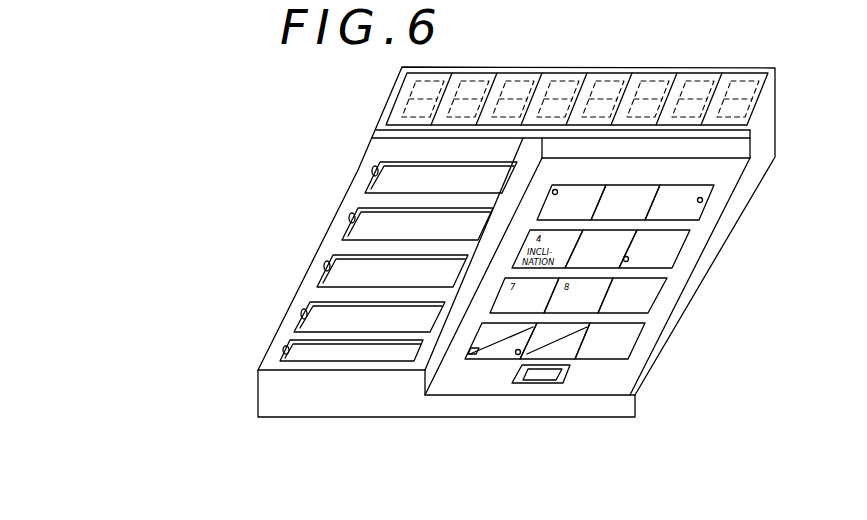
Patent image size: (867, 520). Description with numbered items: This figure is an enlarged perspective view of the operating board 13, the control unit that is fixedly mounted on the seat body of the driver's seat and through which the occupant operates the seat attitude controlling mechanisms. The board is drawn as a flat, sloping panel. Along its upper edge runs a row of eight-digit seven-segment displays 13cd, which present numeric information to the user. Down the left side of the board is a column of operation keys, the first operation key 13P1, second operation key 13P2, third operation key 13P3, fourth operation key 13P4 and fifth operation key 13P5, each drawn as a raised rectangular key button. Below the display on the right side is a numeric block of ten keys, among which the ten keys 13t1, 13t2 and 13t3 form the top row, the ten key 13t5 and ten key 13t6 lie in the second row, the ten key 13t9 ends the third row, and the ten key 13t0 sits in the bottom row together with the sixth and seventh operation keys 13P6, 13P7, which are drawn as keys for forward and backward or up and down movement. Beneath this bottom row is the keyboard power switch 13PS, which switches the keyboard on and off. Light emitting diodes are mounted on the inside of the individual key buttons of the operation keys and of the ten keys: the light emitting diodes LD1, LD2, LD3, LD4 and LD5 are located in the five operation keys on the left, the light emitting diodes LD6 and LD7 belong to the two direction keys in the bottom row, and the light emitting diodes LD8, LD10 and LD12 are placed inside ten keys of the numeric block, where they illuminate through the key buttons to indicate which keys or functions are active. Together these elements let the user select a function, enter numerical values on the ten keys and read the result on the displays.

The operating board 13 is at (354, 127).
The 7-segment displays 13cd is at (654, 72).
The operation key 13P1 is at (378, 177).
The operation key 13P2 is at (350, 220).
The operation key 13P3 is at (320, 268).
The operation key 13P4 is at (298, 320).
The operation key 13P5 is at (280, 355).
The operation key 13P6 is at (483, 350).
The operation key 13P7 is at (517, 350).
The keyboard power switch 13PS is at (543, 383).
The ten key 13t1 is at (567, 190).
The ten key 13t2 is at (624, 193).
The ten key 13t3 is at (683, 197).
The ten key 13t5 is at (622, 247).
The ten key 13t6 is at (665, 248).
The ten key 13t9 is at (657, 300).
The ten key 13t0 is at (623, 348).
The light emitting diode LD1 is at (373, 167).
The light emitting diode LD2 is at (340, 207).
The light emitting diode LD3 is at (333, 263).
The light emitting diode LD4 is at (317, 320).
The light emitting diode LD5 is at (283, 345).
The light emitting diode LD6 is at (477, 350).
The light emitting diode LD7 is at (517, 353).
The light emitting diode LD8 is at (553, 193).
The light emitting diode LD10 is at (700, 200).
The light emitting diode LD12 is at (627, 260).